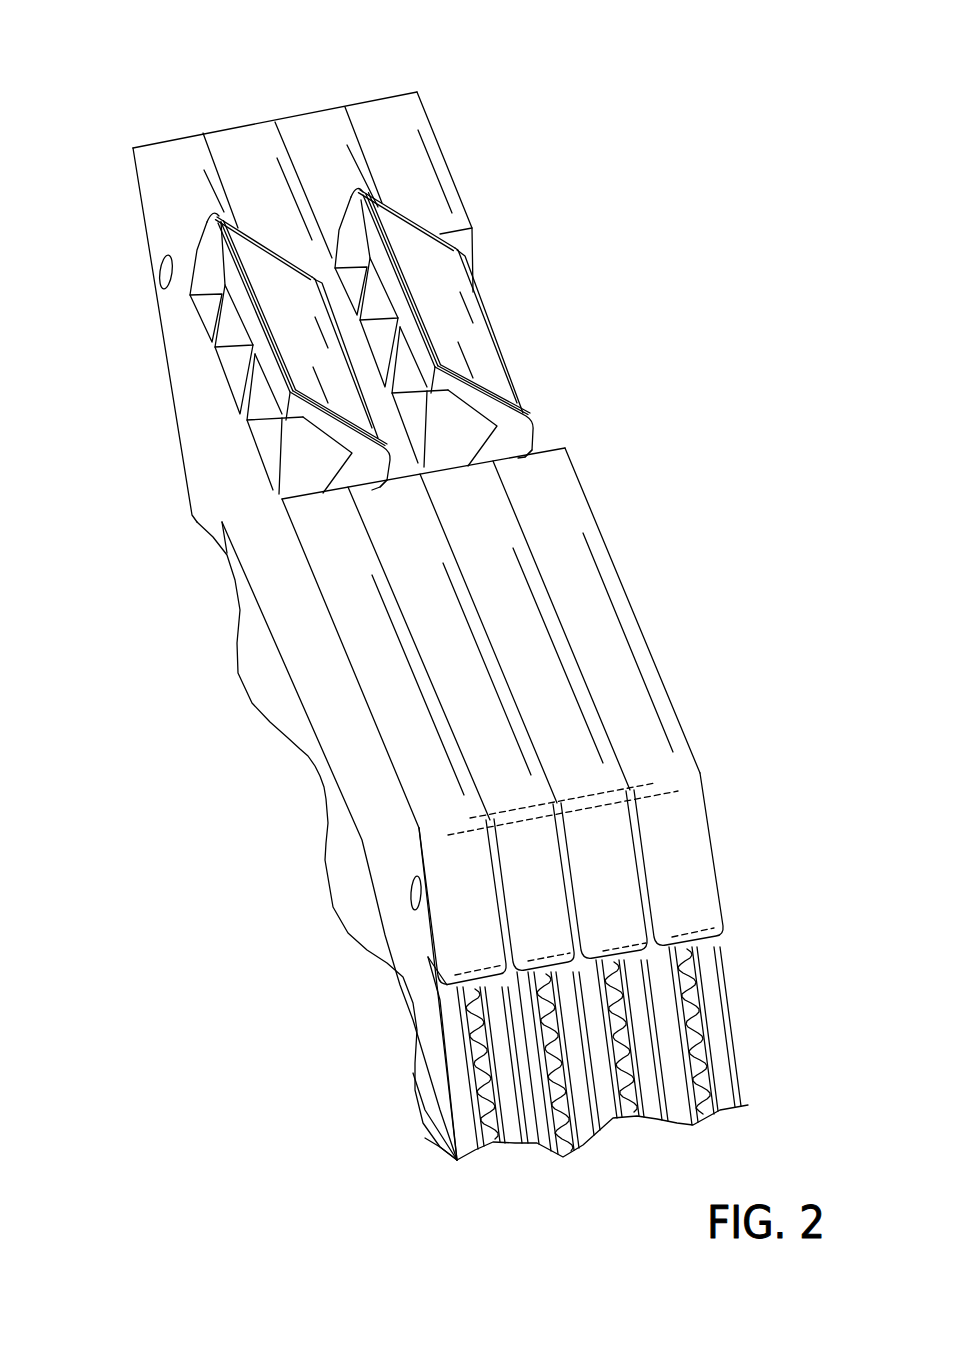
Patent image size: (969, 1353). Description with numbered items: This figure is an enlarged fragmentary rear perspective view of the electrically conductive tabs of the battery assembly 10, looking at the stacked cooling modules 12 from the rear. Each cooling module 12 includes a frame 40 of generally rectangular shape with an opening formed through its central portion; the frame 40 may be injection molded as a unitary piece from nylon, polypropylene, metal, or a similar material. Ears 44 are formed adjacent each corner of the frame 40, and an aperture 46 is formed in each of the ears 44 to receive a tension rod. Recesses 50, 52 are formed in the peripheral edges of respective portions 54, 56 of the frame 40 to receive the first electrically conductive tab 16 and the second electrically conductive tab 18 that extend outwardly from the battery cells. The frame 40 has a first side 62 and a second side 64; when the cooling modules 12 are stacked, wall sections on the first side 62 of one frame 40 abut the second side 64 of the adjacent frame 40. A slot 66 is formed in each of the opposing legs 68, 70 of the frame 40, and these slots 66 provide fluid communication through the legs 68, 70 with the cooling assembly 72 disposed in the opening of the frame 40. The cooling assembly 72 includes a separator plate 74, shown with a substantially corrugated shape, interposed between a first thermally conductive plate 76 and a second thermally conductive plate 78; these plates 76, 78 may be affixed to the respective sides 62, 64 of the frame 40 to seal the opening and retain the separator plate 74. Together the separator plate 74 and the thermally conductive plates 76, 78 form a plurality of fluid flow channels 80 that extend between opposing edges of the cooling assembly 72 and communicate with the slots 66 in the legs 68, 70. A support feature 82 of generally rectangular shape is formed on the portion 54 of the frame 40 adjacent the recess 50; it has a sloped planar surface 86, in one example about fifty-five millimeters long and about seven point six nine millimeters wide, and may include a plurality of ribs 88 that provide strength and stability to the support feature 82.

The battery assembly 10 is at (184, 56).
The cooling module 12 is at (138, 134).
The first electrically conductive tab 16 is at (372, 486).
The second electrically conductive tab 18 is at (255, 258).
The frame 40 is at (142, 205).
The ears 44 is at (692, 857).
The aperture 46 is at (163, 275).
The recess 50 is at (340, 492).
The recess 52 is at (332, 252).
The portion of the frame 54 is at (190, 148).
The portion of the frame 56 is at (265, 133).
The first side of the frame 62 is at (600, 525).
The second side of the frame 64 is at (365, 807).
The slot 66 is at (717, 993).
The leg of the frame 68 is at (410, 978).
The leg of the frame 70 is at (453, 1053).
The cooling assembly 72 is at (558, 1163).
The separator plate 74 is at (705, 1100).
The first thermally conductive plate 76 is at (687, 1130).
The second thermally conductive plate 78 is at (713, 1070).
The fluid flow channels 80 is at (473, 1110).
The support feature 82 is at (270, 478).
The sloped planar surface 86 is at (472, 402).
The ribs 88 is at (215, 323).